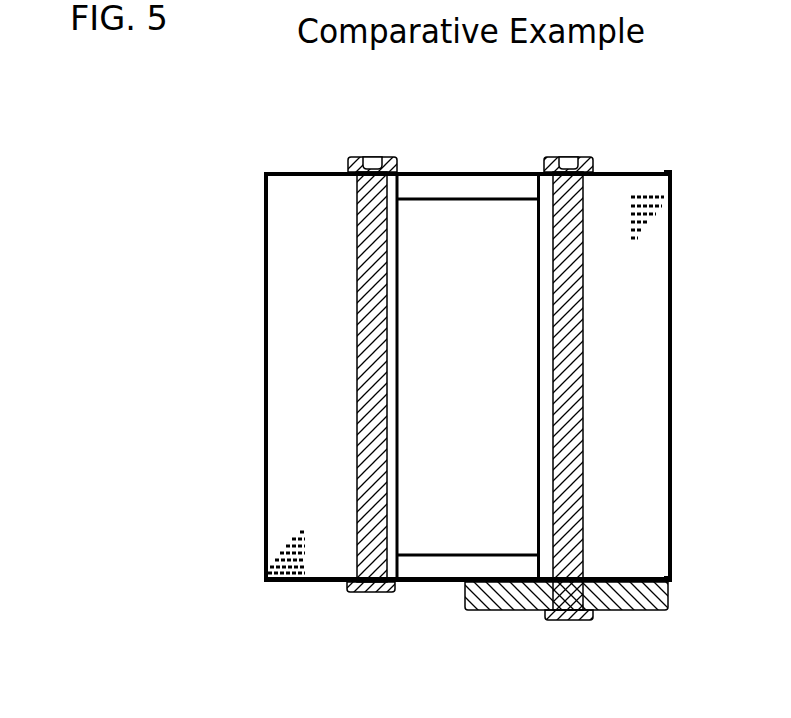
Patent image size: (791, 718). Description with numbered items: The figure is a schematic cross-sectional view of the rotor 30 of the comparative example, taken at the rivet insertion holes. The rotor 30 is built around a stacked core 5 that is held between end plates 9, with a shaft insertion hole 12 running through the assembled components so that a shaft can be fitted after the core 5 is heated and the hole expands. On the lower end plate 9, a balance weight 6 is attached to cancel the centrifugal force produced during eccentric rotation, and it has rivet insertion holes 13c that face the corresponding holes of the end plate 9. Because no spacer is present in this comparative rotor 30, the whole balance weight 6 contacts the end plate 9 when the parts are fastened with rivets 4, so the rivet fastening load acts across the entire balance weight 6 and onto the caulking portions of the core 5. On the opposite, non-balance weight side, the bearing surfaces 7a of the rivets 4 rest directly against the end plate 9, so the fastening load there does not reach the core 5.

The rotor 30 is at (494, 362).
The shaft insertion hole 12 is at (537, 215).
The end plate 9 is at (674, 172).
The rivet 4 is at (570, 300).
The core 5 is at (675, 452).
The balance weight 6 is at (668, 599).
The bearing surface 7a is at (343, 573).
The rivet insertion hole 13c is at (572, 622).